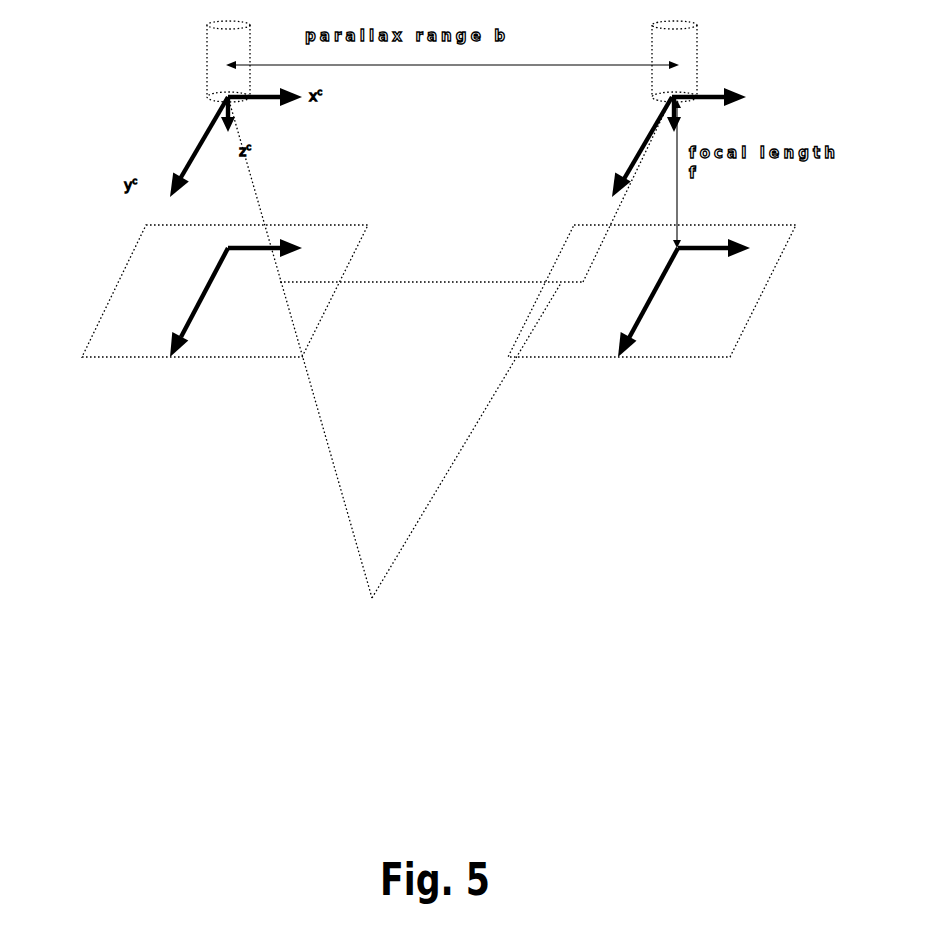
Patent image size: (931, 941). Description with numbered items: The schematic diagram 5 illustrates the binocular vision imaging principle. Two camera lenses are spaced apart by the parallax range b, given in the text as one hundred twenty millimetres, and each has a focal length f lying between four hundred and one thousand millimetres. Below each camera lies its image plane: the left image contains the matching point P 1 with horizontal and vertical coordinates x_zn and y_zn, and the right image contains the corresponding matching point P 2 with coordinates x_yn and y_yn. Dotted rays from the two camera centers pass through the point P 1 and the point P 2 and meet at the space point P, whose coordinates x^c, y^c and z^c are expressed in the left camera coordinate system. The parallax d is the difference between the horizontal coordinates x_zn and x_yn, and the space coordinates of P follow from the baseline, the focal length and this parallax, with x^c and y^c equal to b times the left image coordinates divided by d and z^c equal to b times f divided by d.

The projection point P1 on left image plane 1 is at (205, 291).
The projection point P2 on right image plane 2 is at (671, 291).
The object point P and projection rays 5 is at (450, 348).